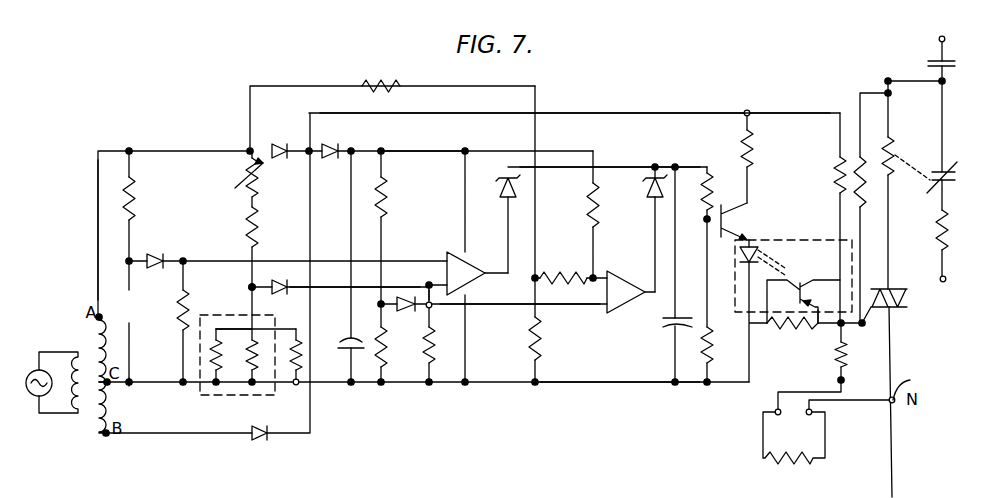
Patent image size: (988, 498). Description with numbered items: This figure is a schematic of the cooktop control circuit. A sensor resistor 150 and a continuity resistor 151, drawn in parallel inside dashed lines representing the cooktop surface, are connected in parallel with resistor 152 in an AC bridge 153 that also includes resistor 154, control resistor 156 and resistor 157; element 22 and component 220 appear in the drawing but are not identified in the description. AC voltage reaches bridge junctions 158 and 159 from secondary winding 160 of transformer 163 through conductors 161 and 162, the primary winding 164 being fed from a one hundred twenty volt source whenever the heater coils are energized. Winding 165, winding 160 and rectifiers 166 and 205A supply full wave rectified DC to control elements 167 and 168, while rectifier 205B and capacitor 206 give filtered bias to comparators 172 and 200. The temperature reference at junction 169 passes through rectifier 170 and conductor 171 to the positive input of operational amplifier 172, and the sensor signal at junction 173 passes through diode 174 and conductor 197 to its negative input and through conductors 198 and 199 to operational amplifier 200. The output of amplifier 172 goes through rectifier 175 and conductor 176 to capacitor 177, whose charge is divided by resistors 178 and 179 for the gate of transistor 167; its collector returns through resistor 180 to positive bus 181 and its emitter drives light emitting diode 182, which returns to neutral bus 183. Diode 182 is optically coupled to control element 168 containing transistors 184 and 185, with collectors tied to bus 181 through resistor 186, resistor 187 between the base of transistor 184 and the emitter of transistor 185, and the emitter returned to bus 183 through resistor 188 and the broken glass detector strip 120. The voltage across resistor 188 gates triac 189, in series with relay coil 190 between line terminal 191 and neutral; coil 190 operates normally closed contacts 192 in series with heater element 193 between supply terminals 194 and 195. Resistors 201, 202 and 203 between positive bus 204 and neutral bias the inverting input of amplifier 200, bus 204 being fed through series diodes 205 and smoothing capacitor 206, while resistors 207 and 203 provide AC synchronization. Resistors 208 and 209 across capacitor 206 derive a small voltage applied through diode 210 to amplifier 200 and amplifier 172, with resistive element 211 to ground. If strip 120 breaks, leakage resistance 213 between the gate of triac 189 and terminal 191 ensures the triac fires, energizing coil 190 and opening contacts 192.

The resistor 22 is at (260, 400).
The broken glass detector strip 120 is at (765, 452).
The sensor resistor 150 is at (203, 377).
The continuity resistor 151 is at (248, 372).
The resistor 152 is at (300, 365).
The AC bridge 153 is at (195, 192).
The resistor 154 is at (132, 190).
The control resistor 156 is at (262, 180).
The resistor 157 is at (258, 230).
The terminal junction 158 is at (132, 150).
The terminal junction 159 is at (131, 382).
The transformer secondary winding 160 is at (97, 350).
The conductor 161 is at (97, 274).
The conductor 162 is at (130, 385).
The transformer 163 is at (75, 465).
The primary winding 164 is at (76, 395).
The winding 165 is at (106, 436).
The rectifier 166 is at (262, 440).
The transistor control element 167 is at (742, 221).
The light sensitive IC control element 168 is at (793, 276).
The junction 169 is at (128, 261).
The rectifier 170 is at (157, 254).
The conductor 171 is at (228, 260).
The operational amplifier 172 is at (456, 257).
The junction 173 is at (251, 287).
The diode 174 is at (272, 290).
The rectifier 175 is at (503, 189).
The conductor 176 is at (630, 166).
The capacitor 177 is at (668, 316).
The resistor 178 is at (708, 178).
The resistor 179 is at (713, 335).
The resistor 180 is at (750, 145).
The positive bus 181 is at (655, 113).
The light emitting diode 182 is at (760, 244).
The common neutral bus 183 is at (597, 385).
The transistor element 184 is at (757, 316).
The transistor element 185 is at (806, 297).
The resistor 186 is at (838, 183).
The resistor 187 is at (818, 328).
The resistor 188 is at (846, 348).
The TRIAC 189 is at (886, 309).
The relay coil 190 is at (886, 93).
The line input voltage terminal 191 is at (886, 80).
The normally closed contacts 192 is at (935, 170).
The heater element 193 is at (942, 238).
The AC power supply terminal 194 is at (936, 36).
The AC power supply terminal 195 is at (941, 277).
The conductor 197 is at (329, 286).
The conductor 198 is at (432, 302).
The conductor 199 is at (517, 305).
The operational amplifier 200 is at (645, 283).
The resistor 201 is at (590, 206).
The resistor 202 is at (585, 276).
The resistor 203 is at (540, 340).
The positive bus line 204 is at (452, 150).
The series diodes 205 is at (648, 191).
The rectifier 205A is at (280, 145).
The rectifier 205B is at (330, 145).
The capacitor 206 is at (340, 343).
The resistor 207 is at (385, 84).
The resistor 208 is at (383, 190).
The resistor 209 is at (383, 340).
The diode 210 is at (404, 300).
The resistive element 211 is at (433, 342).
The leakage resistance 213 is at (855, 205).
The capacitor 220 is at (935, 63).